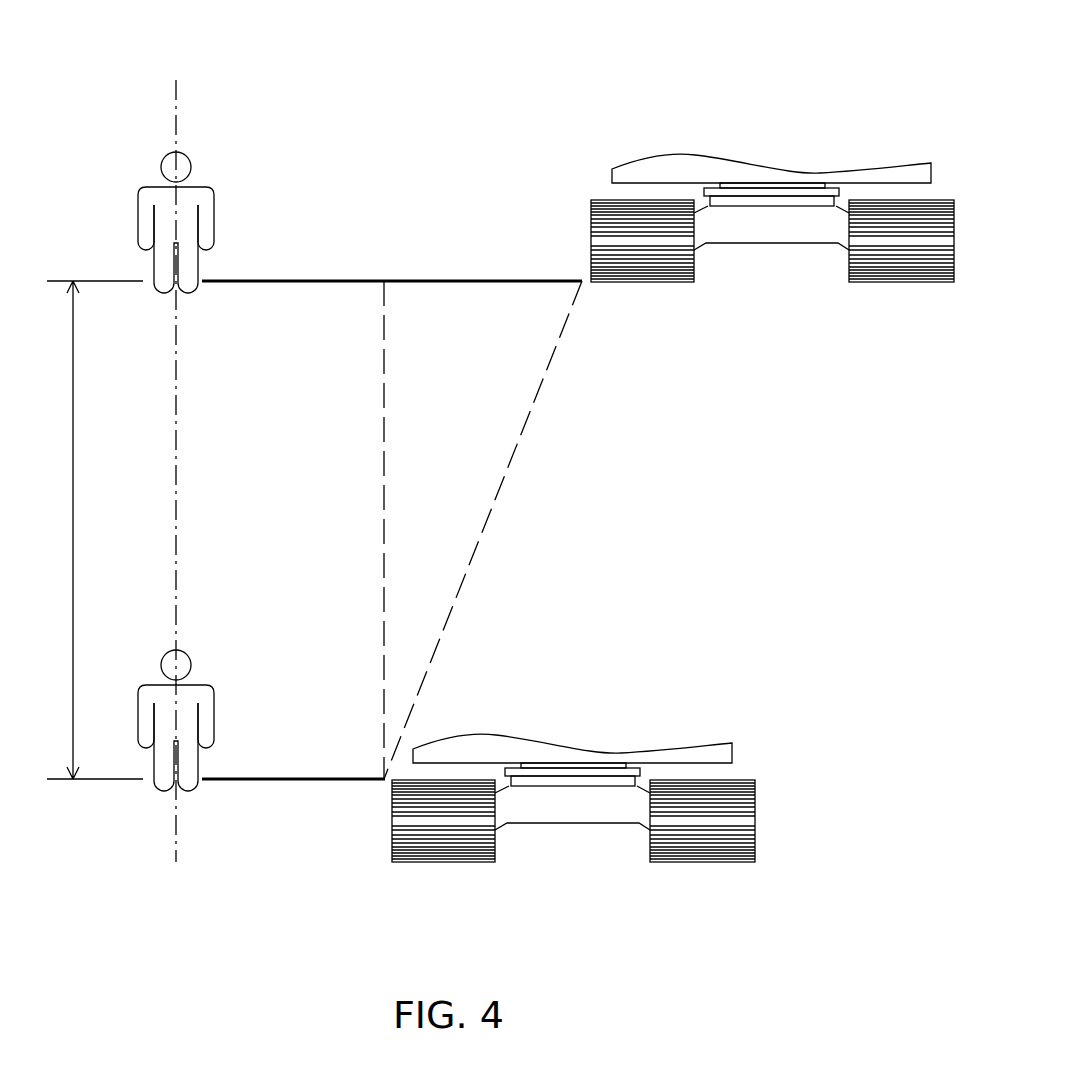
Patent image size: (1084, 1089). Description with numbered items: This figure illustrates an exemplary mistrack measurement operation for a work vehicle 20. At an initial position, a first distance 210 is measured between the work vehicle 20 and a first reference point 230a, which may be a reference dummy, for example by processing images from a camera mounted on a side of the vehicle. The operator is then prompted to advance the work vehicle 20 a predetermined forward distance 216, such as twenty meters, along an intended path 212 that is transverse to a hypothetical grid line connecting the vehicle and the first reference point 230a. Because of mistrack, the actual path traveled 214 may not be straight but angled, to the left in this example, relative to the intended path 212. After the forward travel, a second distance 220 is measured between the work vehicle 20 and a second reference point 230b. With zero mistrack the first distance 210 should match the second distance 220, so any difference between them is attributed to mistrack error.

The work vehicle 20 is at (798, 134).
The first distance 210 is at (277, 779).
The intended path 212 is at (384, 462).
The actual path traveled 214 is at (512, 455).
The predetermined forward distance 216 is at (73, 540).
The second distance 220 is at (288, 281).
The first reference point 230a is at (151, 807).
The second reference point 230b is at (148, 146).